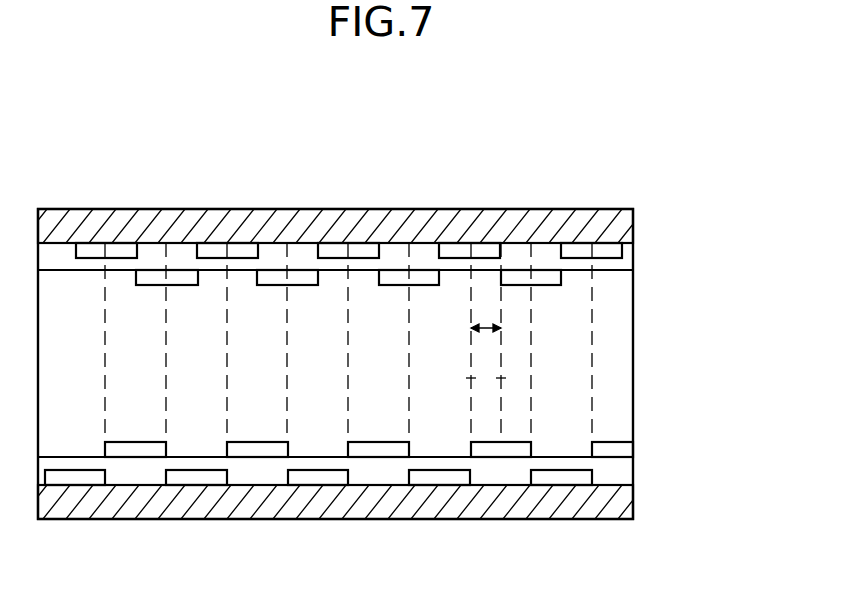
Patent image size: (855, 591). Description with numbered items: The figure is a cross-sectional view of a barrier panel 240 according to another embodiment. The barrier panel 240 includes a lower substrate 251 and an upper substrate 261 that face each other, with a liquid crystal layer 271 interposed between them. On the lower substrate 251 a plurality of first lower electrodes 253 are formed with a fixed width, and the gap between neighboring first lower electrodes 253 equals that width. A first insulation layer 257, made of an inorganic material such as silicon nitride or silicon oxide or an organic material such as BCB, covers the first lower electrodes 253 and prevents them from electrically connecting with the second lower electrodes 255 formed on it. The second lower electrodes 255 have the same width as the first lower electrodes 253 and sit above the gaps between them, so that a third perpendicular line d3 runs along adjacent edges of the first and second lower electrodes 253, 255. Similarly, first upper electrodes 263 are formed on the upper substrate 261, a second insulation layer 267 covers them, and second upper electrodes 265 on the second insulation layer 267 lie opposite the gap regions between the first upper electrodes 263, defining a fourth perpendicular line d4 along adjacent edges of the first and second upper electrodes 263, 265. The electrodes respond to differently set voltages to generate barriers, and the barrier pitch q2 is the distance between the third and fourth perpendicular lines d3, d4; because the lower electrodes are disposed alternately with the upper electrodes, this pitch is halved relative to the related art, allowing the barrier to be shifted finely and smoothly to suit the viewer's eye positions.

The barrier panel 240 is at (655, 135).
The upper substrate 261 is at (602, 216).
The first upper electrodes 263 is at (620, 250).
The second upper electrodes 265 is at (547, 275).
The second insulation layer 267 is at (614, 264).
The liquid crystal layer 271 is at (633, 370).
The second lower electrodes 255 is at (632, 447).
The first insulation layer 257 is at (632, 474).
The first lower electrodes 253 is at (561, 480).
The lower substrate 251 is at (632, 500).
The barrier pitch q2 is at (486, 340).
The third perpendicular line d3 is at (470, 380).
The fourth perpendicular line d4 is at (501, 378).